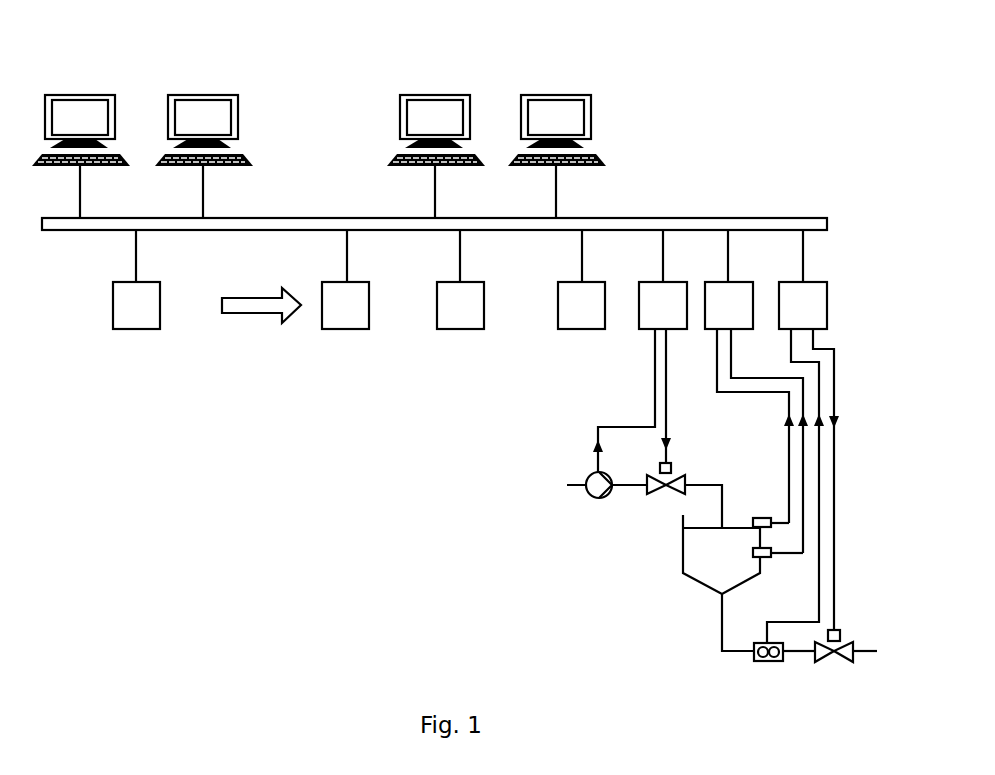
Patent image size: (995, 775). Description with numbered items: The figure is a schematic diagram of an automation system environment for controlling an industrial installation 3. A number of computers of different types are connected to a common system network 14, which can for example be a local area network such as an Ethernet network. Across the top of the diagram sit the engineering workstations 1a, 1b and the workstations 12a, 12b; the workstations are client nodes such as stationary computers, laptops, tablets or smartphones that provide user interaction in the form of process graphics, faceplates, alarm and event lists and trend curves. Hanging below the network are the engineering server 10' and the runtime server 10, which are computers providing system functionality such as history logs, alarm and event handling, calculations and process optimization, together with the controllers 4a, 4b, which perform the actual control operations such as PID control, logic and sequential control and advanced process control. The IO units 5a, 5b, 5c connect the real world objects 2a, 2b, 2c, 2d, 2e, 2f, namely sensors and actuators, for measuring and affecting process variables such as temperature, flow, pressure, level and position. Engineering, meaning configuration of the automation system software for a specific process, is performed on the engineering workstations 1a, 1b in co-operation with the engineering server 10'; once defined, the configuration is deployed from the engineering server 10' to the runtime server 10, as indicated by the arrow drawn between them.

The engineering workstation 1a is at (78, 95).
The engineering workstation 1b is at (201, 95).
The workstation 12a is at (433, 95).
The workstation 12b is at (554, 95).
The industrial installation 3 is at (715, 74).
The system network 14 is at (780, 218).
The engineering server 10' is at (139, 316).
The runtime server 10 is at (348, 316).
The controller 4a is at (460, 329).
The controller 4b is at (582, 329).
The IO unit 5a is at (647, 282).
The IO unit 5b is at (712, 282).
The IO unit 5c is at (787, 282).
The real world object 2a is at (598, 498).
The real world object 2b is at (666, 497).
The real world object 2c is at (757, 518).
The real world object 2d is at (764, 557).
The real world object 2e is at (769, 662).
The real world object 2f is at (835, 662).